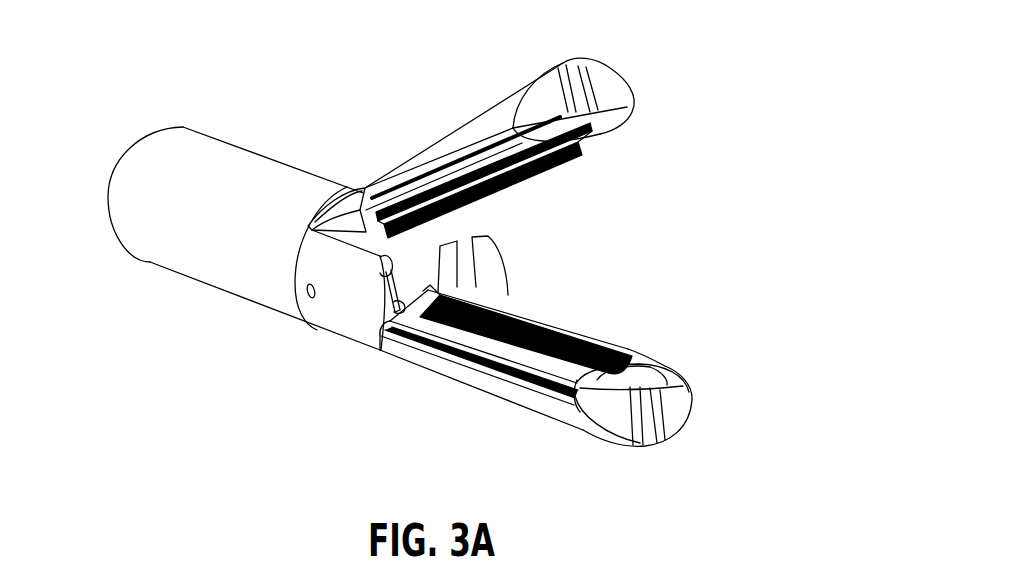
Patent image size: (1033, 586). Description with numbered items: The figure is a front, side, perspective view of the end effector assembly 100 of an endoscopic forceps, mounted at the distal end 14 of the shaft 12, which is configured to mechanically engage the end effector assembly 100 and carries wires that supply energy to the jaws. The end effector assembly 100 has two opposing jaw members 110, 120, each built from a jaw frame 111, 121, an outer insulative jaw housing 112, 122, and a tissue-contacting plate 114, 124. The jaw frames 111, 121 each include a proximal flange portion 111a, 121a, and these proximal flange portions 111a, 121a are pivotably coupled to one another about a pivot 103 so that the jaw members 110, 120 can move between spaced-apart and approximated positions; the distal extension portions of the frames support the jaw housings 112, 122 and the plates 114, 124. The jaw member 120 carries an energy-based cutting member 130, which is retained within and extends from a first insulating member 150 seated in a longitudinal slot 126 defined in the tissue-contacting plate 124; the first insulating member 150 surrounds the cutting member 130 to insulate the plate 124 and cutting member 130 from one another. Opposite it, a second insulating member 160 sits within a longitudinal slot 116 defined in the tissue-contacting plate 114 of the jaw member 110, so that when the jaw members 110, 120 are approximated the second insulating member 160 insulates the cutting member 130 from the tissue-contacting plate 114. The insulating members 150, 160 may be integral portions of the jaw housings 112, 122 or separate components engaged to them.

The end effector assembly 100 is at (393, 42).
The shaft 12 is at (187, 148).
The distal end 14 is at (320, 187).
The jaw member 110 is at (615, 42).
The jaw frame 111 is at (337, 200).
The proximal flange portion 111a is at (345, 235).
The outer insulative jaw housing 112 is at (604, 82).
The tissue-contacting plate 114 is at (590, 134).
The longitudinal slot 116 is at (545, 173).
The second insulating member 160 is at (500, 192).
The pivot 103 is at (307, 295).
The jaw frame 121 is at (348, 356).
The proximal flange portion 121a is at (348, 300).
The jaw member 120 is at (665, 465).
The tissue-contacting plate 124 is at (515, 310).
The energy-based cutting member 130 is at (538, 330).
The longitudinal slot 126 is at (585, 342).
The first insulating member 150 is at (630, 365).
The outer insulative jaw housing 122 is at (677, 403).